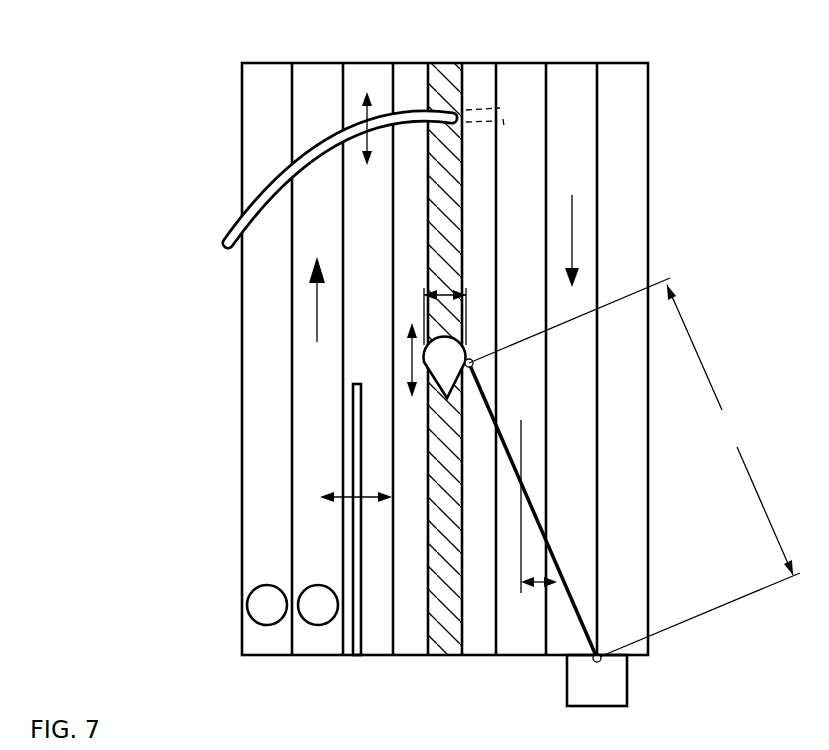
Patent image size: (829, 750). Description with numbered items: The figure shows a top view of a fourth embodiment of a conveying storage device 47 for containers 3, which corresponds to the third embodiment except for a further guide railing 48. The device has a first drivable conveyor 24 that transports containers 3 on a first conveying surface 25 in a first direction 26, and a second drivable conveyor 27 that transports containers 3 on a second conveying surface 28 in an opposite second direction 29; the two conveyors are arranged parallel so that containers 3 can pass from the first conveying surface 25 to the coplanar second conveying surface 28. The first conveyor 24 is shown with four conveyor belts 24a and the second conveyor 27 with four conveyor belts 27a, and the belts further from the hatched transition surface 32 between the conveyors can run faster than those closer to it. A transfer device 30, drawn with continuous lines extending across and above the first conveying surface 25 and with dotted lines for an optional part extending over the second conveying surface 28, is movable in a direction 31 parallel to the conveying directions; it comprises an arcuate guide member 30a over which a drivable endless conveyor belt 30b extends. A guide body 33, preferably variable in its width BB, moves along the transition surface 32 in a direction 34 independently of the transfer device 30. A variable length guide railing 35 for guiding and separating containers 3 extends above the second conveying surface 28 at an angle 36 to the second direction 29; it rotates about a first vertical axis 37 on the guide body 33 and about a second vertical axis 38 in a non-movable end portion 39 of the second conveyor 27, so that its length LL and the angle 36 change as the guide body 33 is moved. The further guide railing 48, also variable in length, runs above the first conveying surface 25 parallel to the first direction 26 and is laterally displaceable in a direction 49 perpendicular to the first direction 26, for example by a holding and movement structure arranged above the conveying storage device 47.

The containers 3 is at (267, 620).
The first drivable conveyor 24 is at (395, 40).
The conveyor belts 24a is at (320, 63).
The first conveying surface 25 is at (305, 460).
The first direction 26 is at (316, 305).
The second drivable conveyor 27 is at (493, 42).
The conveyor belts 27a is at (567, 63).
The second conveying surface 28 is at (583, 403).
The second direction 29 is at (573, 232).
The transfer device 30 is at (262, 170).
The arcuate guide member 30a is at (232, 236).
The drivable endless conveyor belt 30b is at (240, 236).
The direction 31 is at (366, 116).
The transition surface 32 is at (450, 63).
The guide body 33 is at (443, 387).
The direction 34 is at (412, 359).
The variable length guide railing 35 is at (576, 605).
The angle 36 is at (536, 582).
The first vertical axis 37 is at (472, 362).
The second vertical axis 38 is at (595, 661).
The non-movable end portion 39 is at (628, 681).
The conveying storage device 47 is at (777, 40).
The further guide railing 48 is at (362, 586).
The direction 49 is at (364, 496).
The width BB is at (448, 292).
The length LL is at (634, 468).